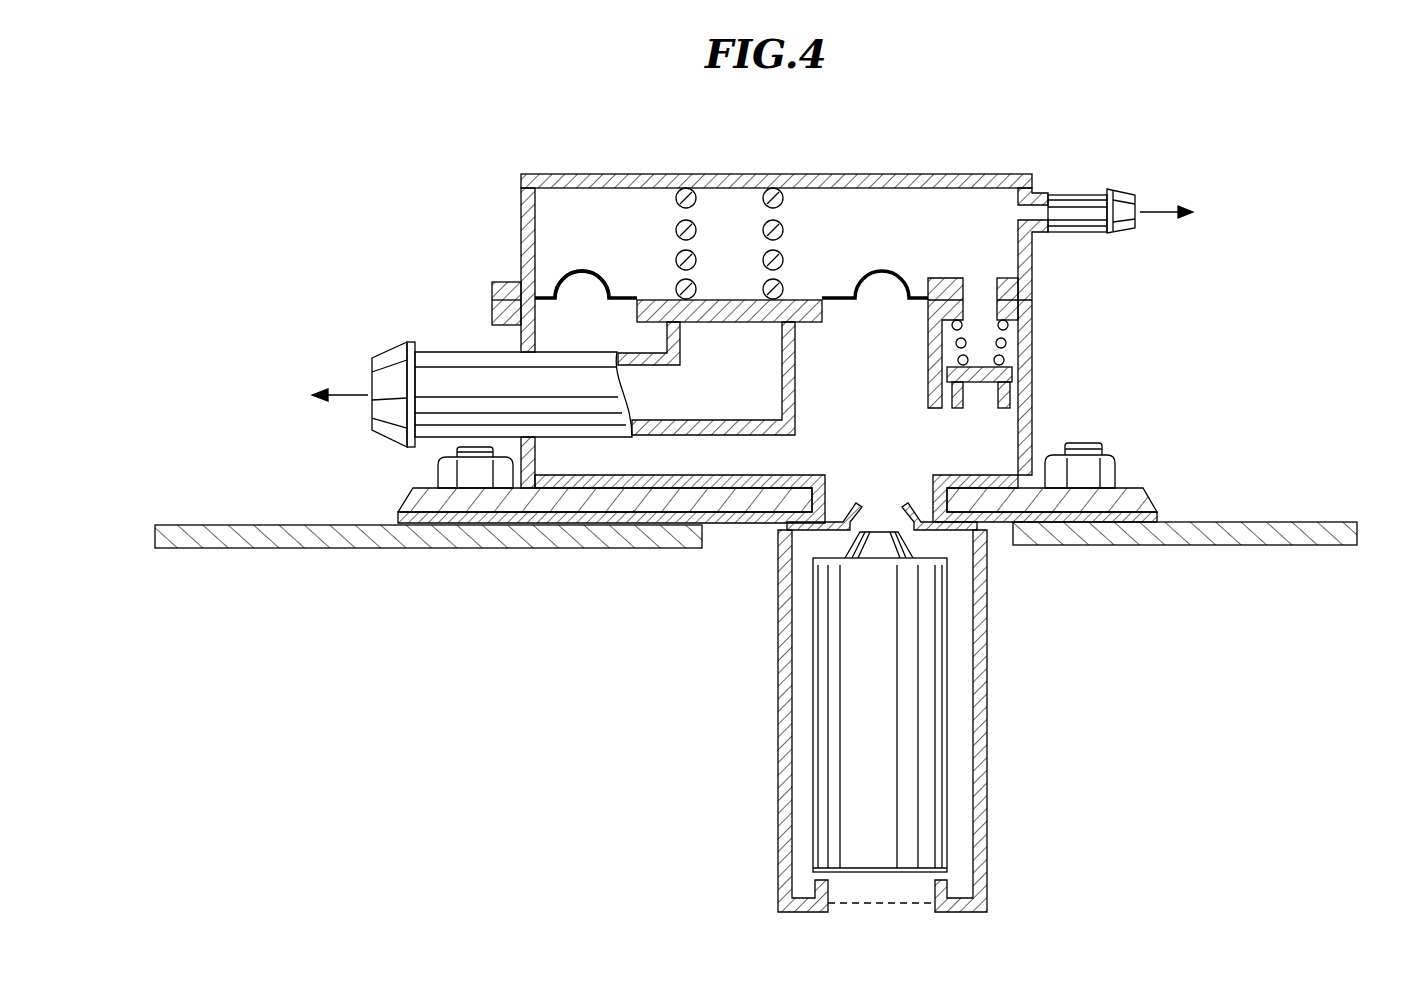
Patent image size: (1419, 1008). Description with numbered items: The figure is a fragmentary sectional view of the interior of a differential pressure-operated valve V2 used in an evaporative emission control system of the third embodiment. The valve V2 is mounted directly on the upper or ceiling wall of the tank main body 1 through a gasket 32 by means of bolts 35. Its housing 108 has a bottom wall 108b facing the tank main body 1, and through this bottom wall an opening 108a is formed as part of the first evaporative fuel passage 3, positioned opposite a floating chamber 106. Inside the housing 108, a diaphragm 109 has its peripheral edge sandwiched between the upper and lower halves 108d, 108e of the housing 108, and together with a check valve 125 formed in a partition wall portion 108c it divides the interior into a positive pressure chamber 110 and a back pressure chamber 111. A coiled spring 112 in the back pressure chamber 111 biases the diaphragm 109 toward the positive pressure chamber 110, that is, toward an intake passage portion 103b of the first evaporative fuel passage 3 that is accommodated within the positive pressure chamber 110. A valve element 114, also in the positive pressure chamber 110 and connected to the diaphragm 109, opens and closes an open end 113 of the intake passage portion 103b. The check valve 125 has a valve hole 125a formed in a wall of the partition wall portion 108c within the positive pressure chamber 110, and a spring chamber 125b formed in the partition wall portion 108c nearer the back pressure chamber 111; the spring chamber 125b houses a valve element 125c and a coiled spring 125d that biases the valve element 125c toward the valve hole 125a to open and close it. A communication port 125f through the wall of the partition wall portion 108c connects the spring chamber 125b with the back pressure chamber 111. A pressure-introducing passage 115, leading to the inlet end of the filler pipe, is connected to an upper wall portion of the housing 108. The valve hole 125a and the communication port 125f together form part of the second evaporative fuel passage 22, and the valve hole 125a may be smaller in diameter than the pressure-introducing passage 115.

The differential pressure-operated valve V2 is at (953, 108).
The housing 108 is at (660, 174).
The back pressure chamber 111 is at (853, 192).
The pressure-introducing passage 115 is at (1073, 193).
The coiled spring 112 is at (800, 258).
The check valve 125 is at (985, 290).
The diaphragm 109 is at (582, 272).
The upper half of housing 108d is at (521, 200).
The lower half of housing 108e is at (521, 333).
The intake passage portion 103b is at (465, 352).
The first evaporative fuel passage 3 is at (482, 363).
The communication port 125f is at (1020, 268).
The partition wall portion 108c is at (928, 319).
The coiled spring 125d is at (1030, 322).
The valve element 125c is at (1015, 376).
The open end 113 is at (682, 338).
The valve element 114 is at (810, 317).
The spring chamber 125b is at (947, 358).
The bolts 35 is at (1097, 445).
The opening 108a is at (828, 490).
The valve hole 125a is at (965, 410).
The second evaporative fuel passage 22 is at (938, 387).
The gasket 32 is at (1143, 498).
The tank main body 1 is at (258, 524).
The positive pressure chamber 110 is at (752, 455).
The bottom wall 108b is at (763, 523).
The floating chamber 106 is at (990, 676).